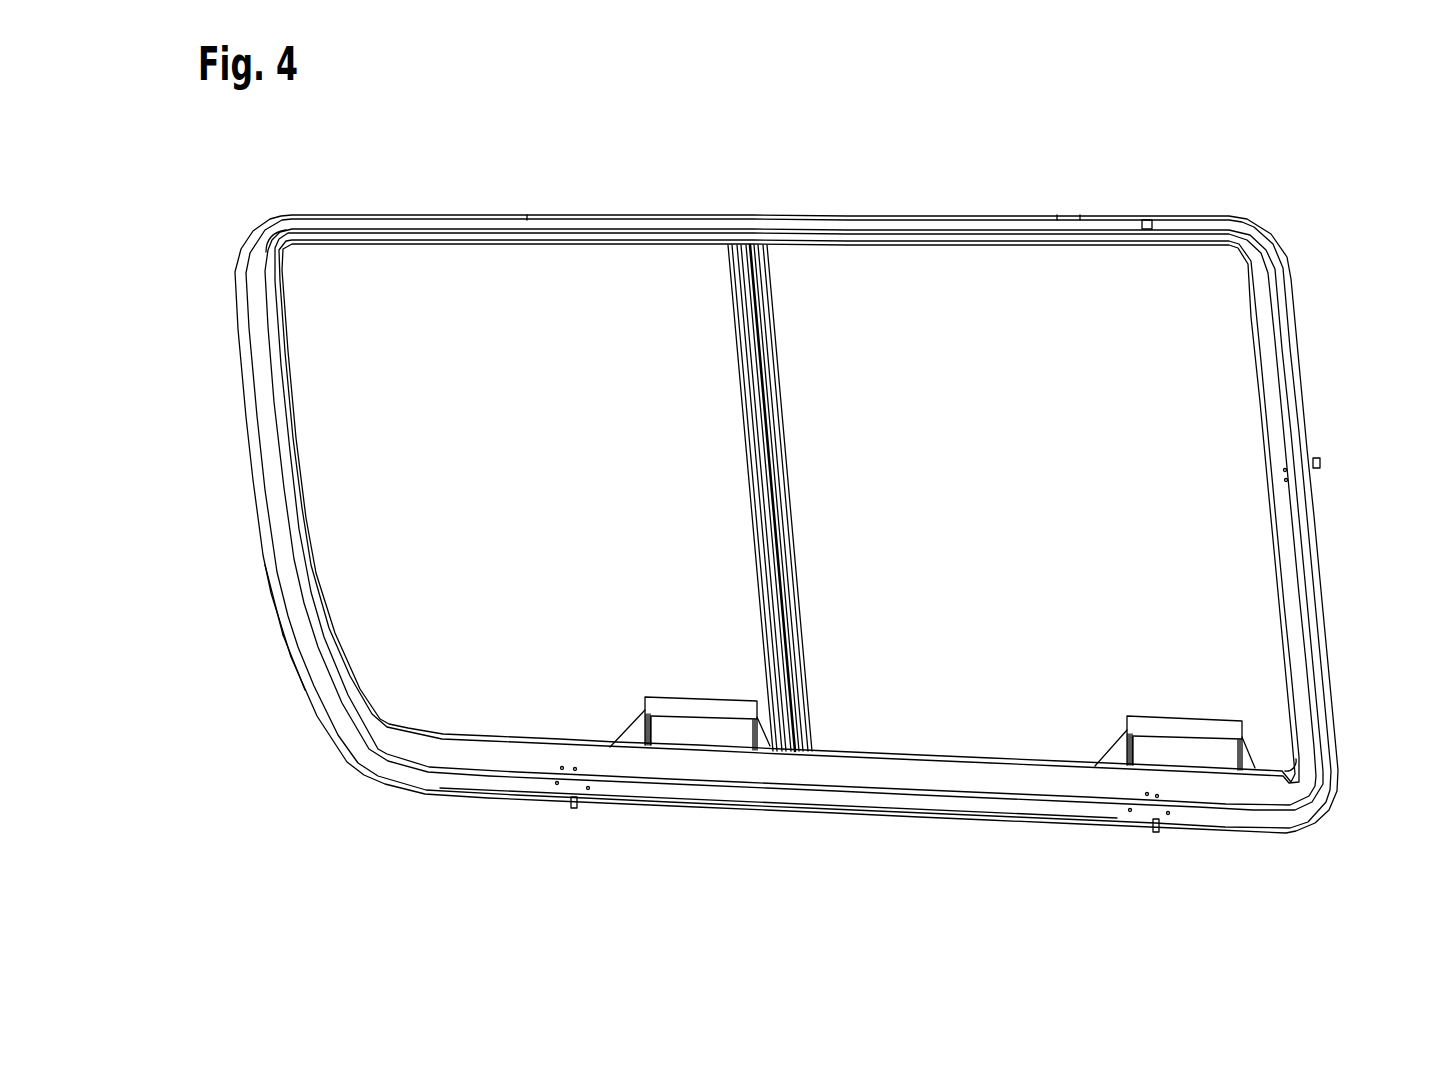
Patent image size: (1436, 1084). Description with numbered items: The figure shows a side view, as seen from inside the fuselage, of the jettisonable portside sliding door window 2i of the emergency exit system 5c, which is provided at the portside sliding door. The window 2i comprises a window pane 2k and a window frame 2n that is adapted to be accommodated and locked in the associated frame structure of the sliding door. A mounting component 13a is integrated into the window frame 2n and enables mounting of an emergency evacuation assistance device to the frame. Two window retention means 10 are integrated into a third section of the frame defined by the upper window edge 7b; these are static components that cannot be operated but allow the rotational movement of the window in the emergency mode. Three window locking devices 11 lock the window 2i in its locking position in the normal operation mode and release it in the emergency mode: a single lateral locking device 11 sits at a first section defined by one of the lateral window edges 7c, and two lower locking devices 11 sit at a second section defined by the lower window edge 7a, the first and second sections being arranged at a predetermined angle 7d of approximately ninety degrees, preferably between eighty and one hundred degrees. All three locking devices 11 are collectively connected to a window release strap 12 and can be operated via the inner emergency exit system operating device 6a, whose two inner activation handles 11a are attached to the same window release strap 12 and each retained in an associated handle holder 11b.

The jettisonable portside sliding door window 2i is at (1166, 285).
The window pane 2k is at (401, 632).
The window frame 2n is at (262, 292).
The emergency exit system 5c is at (379, 202).
The inner emergency exit system operating device 6a is at (737, 695).
The lower window edge 7a is at (296, 740).
The upper window edge 7b is at (1303, 232).
The lateral window edge 7c is at (1327, 853).
The predetermined angle 7d is at (1260, 760).
The window retention means 10 is at (537, 196).
The window locking device 11 is at (1323, 474).
The activation handle 11a is at (657, 705).
The handle holder 11b is at (718, 718).
The window release strap 12 is at (716, 735).
The mounting component 13a is at (1149, 221).